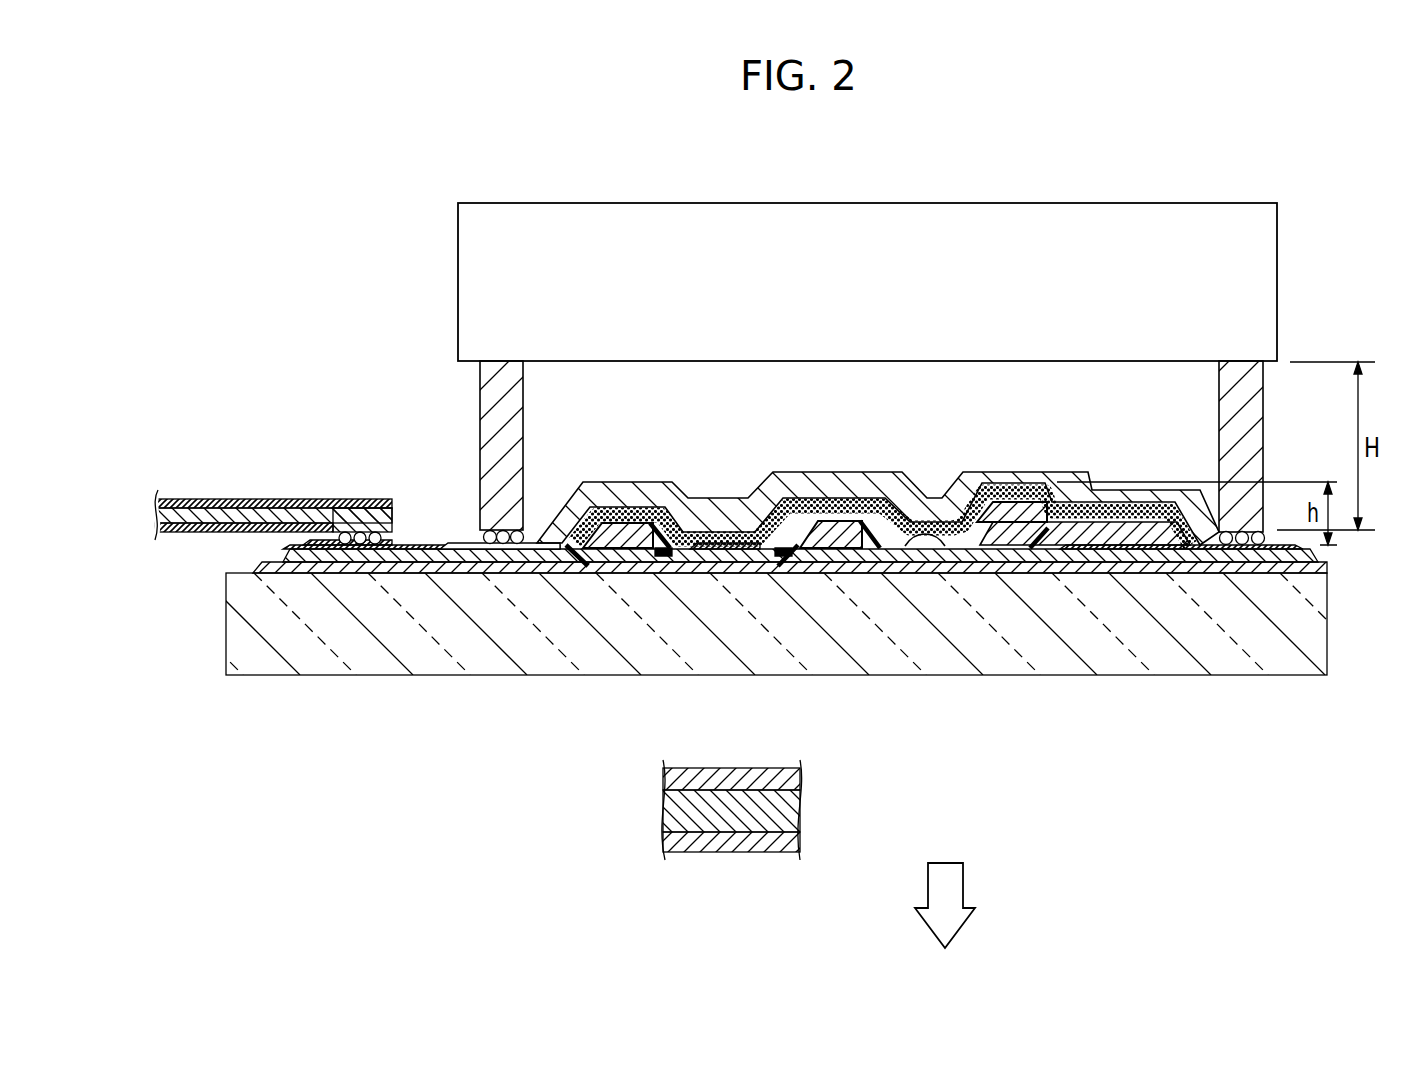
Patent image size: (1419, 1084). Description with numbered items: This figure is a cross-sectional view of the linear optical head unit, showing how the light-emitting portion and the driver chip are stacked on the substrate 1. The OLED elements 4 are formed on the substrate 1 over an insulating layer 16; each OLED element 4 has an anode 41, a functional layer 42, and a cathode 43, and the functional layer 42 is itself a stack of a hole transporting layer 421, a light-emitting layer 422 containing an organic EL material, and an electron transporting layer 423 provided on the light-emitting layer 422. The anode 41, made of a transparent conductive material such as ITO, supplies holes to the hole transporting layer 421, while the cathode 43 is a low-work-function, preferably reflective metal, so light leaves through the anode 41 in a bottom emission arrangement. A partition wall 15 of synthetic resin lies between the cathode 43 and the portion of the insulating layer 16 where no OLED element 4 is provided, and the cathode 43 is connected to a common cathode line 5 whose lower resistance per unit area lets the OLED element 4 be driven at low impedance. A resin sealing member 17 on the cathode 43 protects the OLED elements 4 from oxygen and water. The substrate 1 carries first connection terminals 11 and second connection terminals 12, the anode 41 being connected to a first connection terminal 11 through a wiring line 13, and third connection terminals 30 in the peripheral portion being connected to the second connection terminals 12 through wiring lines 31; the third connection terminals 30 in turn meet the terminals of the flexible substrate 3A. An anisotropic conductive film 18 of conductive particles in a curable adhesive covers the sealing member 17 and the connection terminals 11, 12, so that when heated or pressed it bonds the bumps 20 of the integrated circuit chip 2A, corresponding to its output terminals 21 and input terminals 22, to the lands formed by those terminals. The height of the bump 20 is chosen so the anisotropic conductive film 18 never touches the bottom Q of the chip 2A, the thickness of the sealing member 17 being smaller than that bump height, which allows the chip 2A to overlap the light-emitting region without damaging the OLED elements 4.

The substrate 1 is at (232, 632).
The integrated circuit chip 2A is at (848, 217).
The flexible substrate 3A is at (307, 499).
The OLED element 4 is at (834, 781).
The common cathode line 5 is at (720, 562).
The first connection terminal 11 is at (1235, 551).
The second connection terminal 12 is at (512, 560).
The wiring line 13 is at (1185, 551).
The partition wall 15 is at (620, 536).
The insulating layer 16 is at (283, 562).
The sealing member 17 is at (1185, 497).
The anisotropic conductive film 18 is at (557, 522).
The bump 20 is at (872, 388).
The output terminal 21 is at (1233, 368).
The input terminal 22 is at (487, 415).
The third connection terminal 30 is at (345, 549).
The wiring line 31 is at (405, 548).
The anode 41 is at (952, 542).
The functional layer 42 is at (905, 560).
The cathode 43 is at (925, 522).
The hole transporting layer 421 is at (800, 837).
The light-emitting layer 422 is at (800, 802).
The electron transporting layer 423 is at (800, 772).
The bottom of the integrated circuit chip Q is at (620, 367).